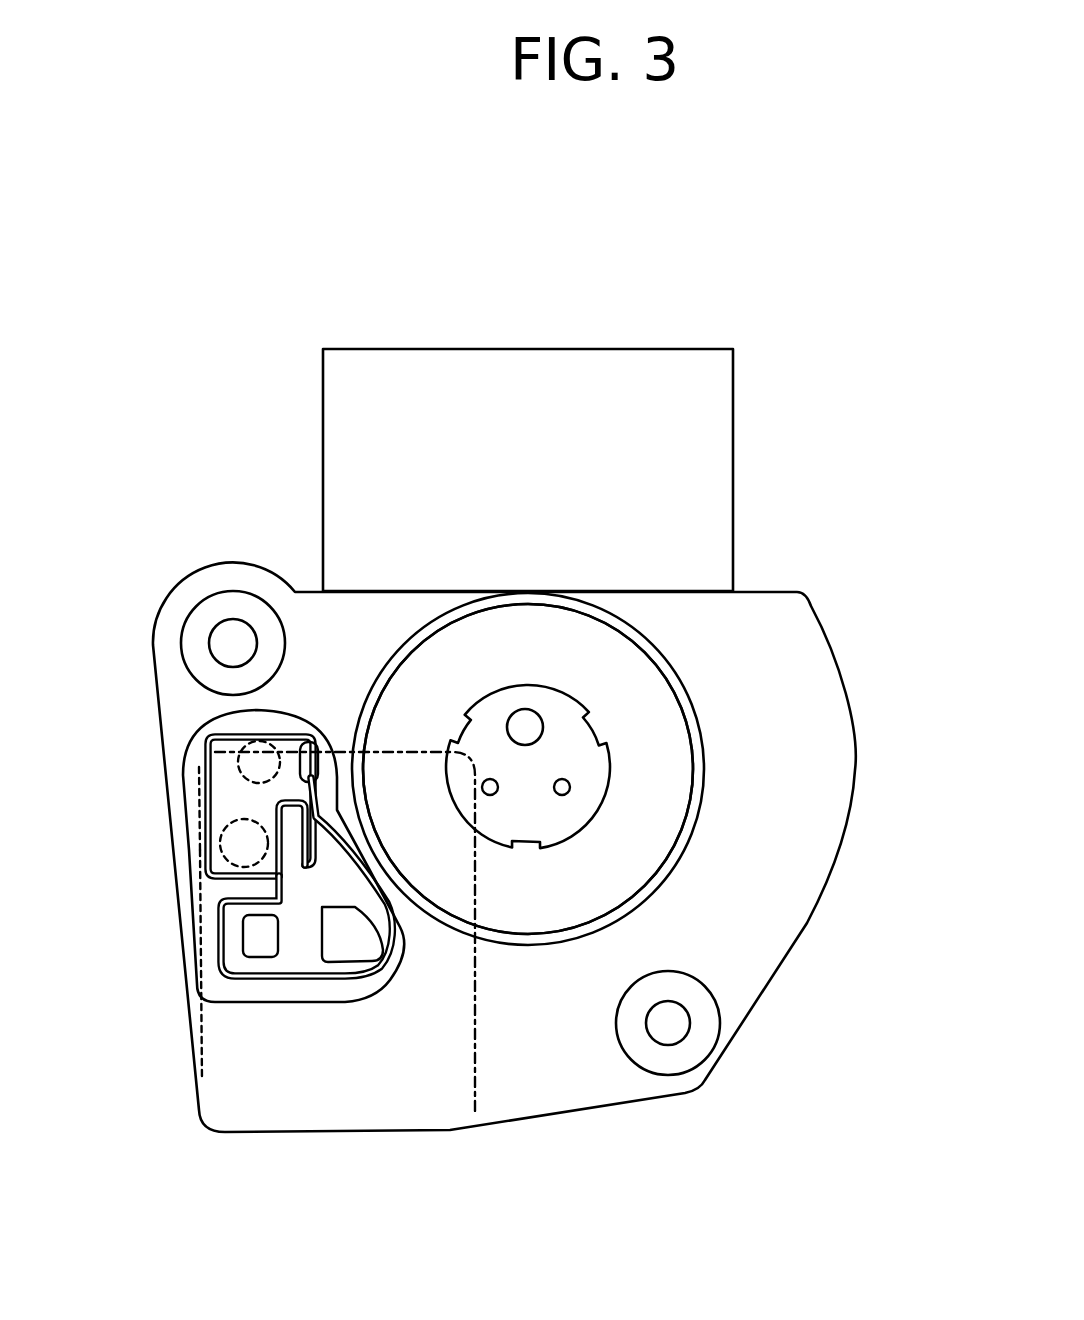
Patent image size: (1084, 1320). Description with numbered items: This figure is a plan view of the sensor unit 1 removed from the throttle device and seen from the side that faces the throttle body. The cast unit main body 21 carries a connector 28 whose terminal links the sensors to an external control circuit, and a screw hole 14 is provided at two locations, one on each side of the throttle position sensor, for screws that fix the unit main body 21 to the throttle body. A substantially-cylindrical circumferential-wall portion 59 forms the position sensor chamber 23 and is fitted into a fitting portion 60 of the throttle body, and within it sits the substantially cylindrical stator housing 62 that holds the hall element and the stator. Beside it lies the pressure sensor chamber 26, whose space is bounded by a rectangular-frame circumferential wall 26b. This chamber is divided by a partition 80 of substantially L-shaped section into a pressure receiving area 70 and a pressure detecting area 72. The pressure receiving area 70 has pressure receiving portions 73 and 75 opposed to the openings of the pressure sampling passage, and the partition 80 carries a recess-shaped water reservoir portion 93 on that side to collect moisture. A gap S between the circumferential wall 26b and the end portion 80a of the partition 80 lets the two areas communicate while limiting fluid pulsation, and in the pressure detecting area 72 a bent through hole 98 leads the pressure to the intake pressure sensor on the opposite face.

The sensor unit 1 is at (513, 685).
The connector 28 is at (716, 463).
The screw hole 14 is at (228, 643).
The substantially-cylindrical circumferential-wall portion 59 is at (690, 650).
The fitting portion 60 is at (670, 790).
The position sensor chamber 23 is at (665, 769).
The stator housing 62 is at (588, 765).
The unit main body 21 is at (797, 870).
The pressure sensor chamber 26 is at (477, 1070).
The circumferential wall 26b is at (296, 756).
The gap S is at (317, 790).
The pressure receiving portion 73 is at (196, 772).
The pressure receiving area 70 is at (237, 802).
The pressure receiving portion 75 is at (200, 850).
The through hole 98 is at (255, 938).
The partition 80 is at (283, 880).
The end portion 80a is at (293, 821).
The water reservoir portion 93 is at (280, 863).
The pressure detecting area 72 is at (287, 958).